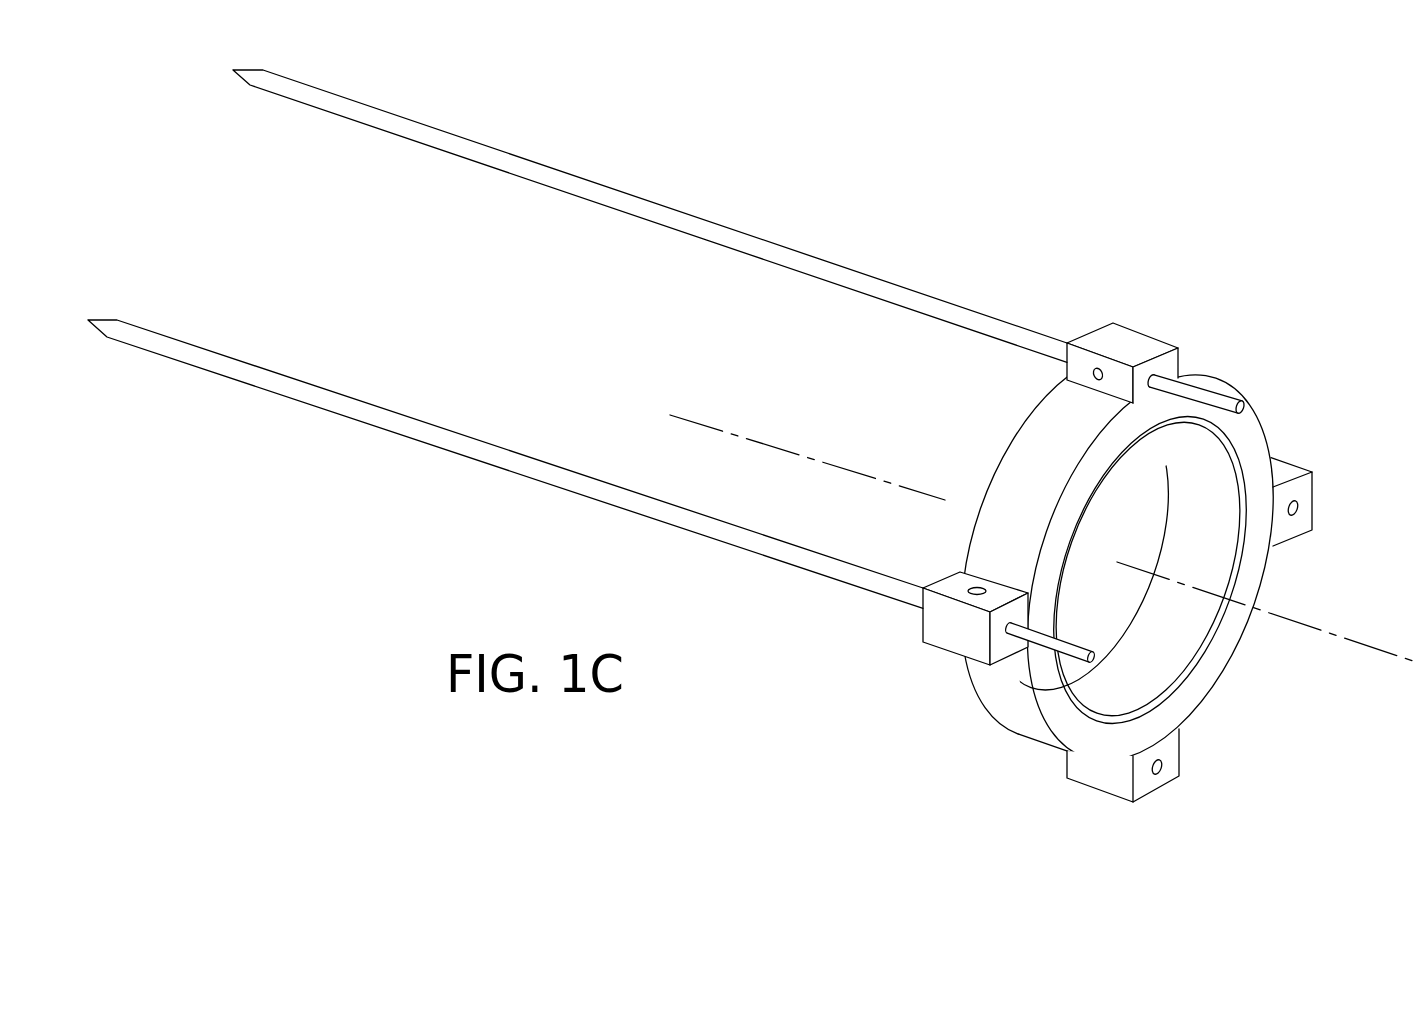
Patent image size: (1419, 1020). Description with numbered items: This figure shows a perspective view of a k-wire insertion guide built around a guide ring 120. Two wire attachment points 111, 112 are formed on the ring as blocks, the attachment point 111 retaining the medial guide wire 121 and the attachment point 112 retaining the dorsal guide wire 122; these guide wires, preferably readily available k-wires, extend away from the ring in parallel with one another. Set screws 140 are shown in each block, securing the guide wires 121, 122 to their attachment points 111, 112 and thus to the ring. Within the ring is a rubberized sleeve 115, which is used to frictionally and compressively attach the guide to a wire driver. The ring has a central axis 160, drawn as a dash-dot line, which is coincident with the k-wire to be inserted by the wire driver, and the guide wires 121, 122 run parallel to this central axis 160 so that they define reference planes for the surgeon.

The attachment point 111 is at (937, 645).
The attachment point 112 is at (1143, 333).
The rubberized sleeve 115 is at (1213, 638).
The flange ring 120 is at (1273, 567).
The medial guide wire 121 is at (298, 380).
The dorsal guide wire 122 is at (565, 172).
The set screws 140 is at (1092, 374).
The central axis 160 is at (742, 437).